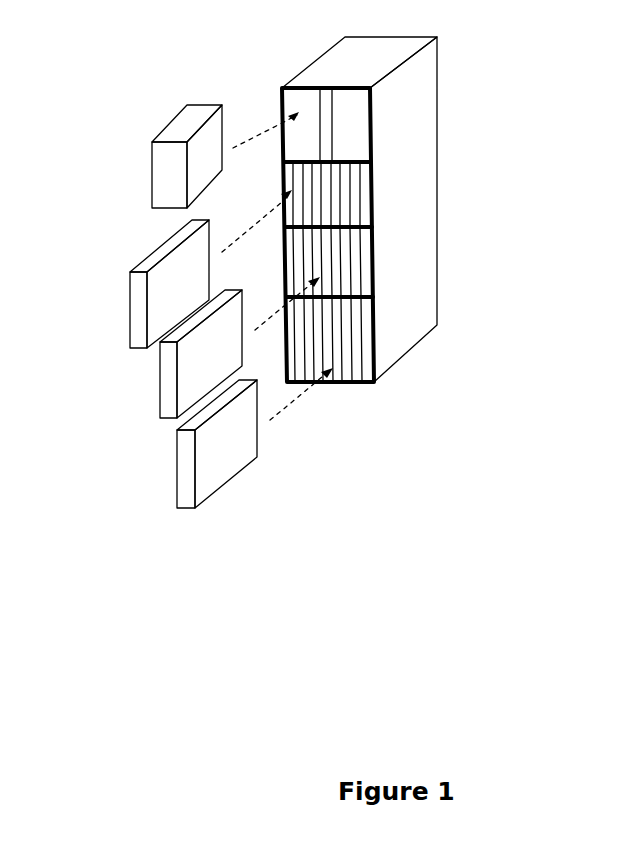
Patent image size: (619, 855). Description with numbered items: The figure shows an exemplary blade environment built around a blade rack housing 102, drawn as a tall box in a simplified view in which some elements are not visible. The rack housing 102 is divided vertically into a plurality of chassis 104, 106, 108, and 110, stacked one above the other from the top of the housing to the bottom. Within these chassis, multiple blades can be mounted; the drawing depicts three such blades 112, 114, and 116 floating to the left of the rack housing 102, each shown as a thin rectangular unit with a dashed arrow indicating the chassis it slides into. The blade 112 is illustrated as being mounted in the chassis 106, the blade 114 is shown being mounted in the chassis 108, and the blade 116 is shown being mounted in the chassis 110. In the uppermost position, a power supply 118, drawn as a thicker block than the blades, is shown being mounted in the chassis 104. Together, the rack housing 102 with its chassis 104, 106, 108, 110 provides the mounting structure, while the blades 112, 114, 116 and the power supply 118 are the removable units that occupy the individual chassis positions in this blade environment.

The blade rack housing 102 is at (438, 80).
The chassis 104 is at (372, 120).
The chassis 106 is at (372, 195).
The chassis 108 is at (367, 258).
The chassis 110 is at (368, 335).
The blade 112 is at (128, 293).
The blade 114 is at (158, 353).
The blade 116 is at (177, 453).
The power supply 118 is at (165, 122).